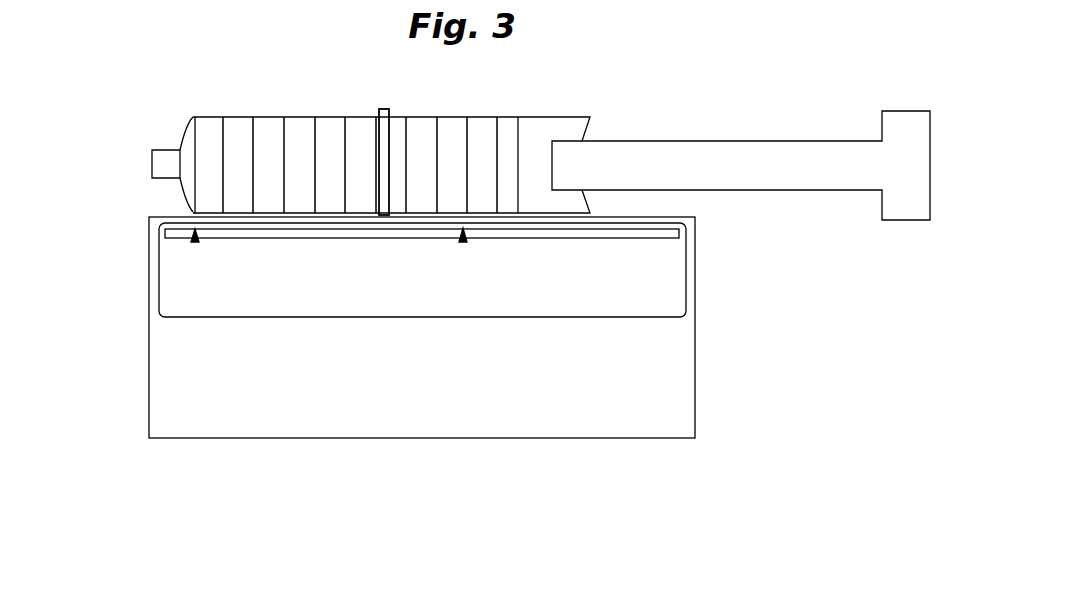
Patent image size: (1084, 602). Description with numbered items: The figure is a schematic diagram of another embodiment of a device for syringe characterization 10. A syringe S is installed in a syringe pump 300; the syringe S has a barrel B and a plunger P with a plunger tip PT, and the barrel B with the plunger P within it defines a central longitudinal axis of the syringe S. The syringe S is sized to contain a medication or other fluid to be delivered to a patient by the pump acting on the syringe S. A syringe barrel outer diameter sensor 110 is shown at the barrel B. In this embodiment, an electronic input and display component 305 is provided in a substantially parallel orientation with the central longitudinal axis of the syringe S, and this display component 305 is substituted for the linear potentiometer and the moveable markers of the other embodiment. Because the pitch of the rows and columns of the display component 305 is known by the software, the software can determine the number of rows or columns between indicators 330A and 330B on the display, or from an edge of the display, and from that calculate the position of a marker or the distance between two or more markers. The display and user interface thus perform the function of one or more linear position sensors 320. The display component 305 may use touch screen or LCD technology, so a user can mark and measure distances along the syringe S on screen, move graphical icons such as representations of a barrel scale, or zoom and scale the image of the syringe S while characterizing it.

The syringe S is at (217, 97).
The barrel B is at (423, 115).
The syringe barrel outer diameter sensor 110 is at (387, 109).
The plunger tip PT is at (518, 138).
The plunger P is at (698, 141).
The syringe pump 300 is at (697, 305).
The electronic input and display component 305 is at (173, 302).
The linear position sensor 320 is at (163, 230).
The indicator 330A is at (196, 243).
The indicator 330B is at (463, 244).
The device for syringe characterization 10 is at (416, 528).